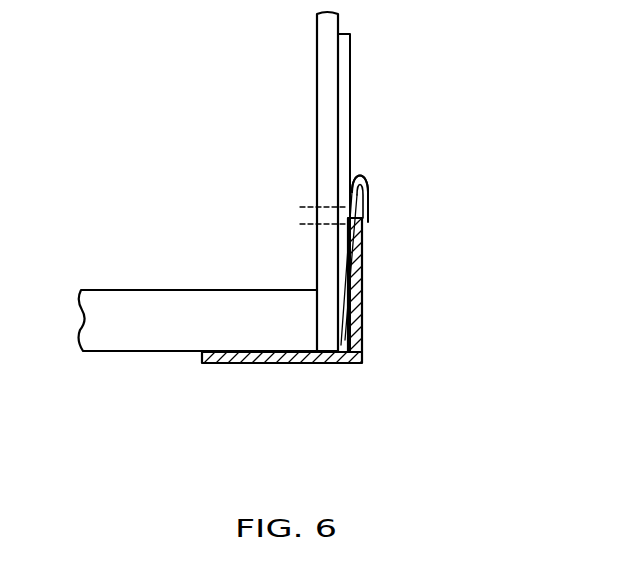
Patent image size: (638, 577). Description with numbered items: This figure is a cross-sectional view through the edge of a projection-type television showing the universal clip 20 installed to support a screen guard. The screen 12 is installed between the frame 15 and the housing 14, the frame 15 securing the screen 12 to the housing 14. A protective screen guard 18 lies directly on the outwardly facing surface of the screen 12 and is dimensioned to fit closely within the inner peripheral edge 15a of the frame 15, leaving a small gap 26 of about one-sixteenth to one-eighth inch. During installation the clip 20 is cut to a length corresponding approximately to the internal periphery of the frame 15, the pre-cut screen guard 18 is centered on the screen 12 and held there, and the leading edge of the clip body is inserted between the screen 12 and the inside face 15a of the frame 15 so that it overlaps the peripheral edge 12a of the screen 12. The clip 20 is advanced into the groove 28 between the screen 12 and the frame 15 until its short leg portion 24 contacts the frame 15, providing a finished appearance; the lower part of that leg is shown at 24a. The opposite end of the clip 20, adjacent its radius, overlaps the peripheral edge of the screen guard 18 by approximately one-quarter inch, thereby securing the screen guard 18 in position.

The screen 12 is at (317, 100).
The peripheral edge of the screen 12a is at (323, 335).
The housing 14 is at (110, 298).
The frame 15 is at (250, 365).
The inner peripheral edge of the frame 15a is at (365, 318).
The screen guard 18 is at (345, 75).
The universal clip 20 is at (372, 176).
The short leg portion 24 is at (368, 190).
The clip leg 24a is at (365, 222).
The gap 26 is at (317, 207).
The groove 28 is at (328, 365).